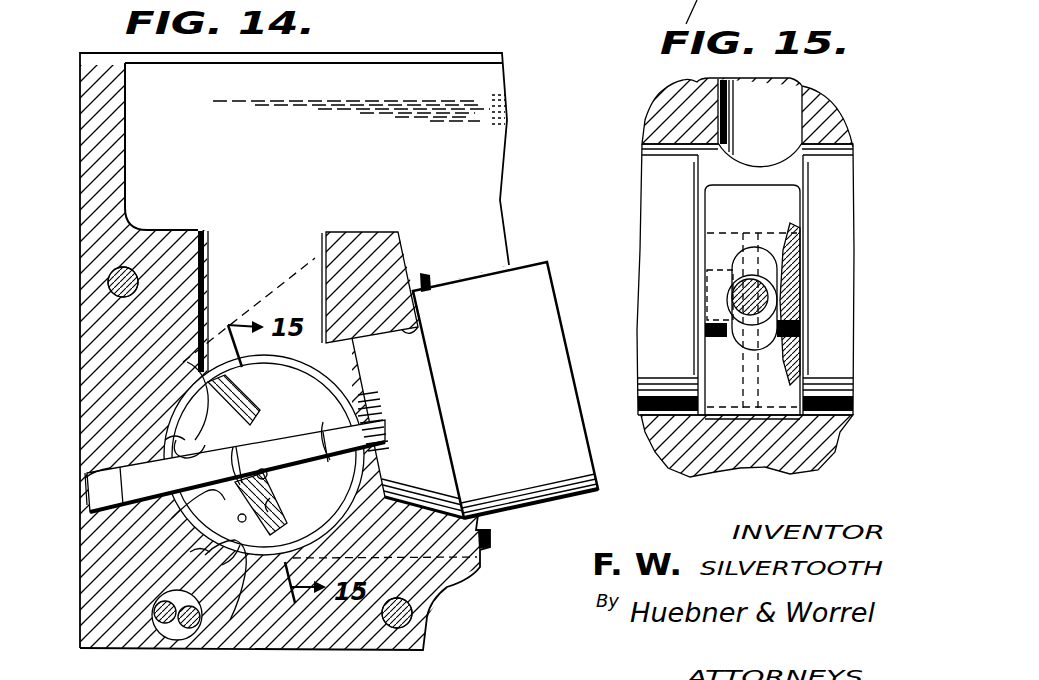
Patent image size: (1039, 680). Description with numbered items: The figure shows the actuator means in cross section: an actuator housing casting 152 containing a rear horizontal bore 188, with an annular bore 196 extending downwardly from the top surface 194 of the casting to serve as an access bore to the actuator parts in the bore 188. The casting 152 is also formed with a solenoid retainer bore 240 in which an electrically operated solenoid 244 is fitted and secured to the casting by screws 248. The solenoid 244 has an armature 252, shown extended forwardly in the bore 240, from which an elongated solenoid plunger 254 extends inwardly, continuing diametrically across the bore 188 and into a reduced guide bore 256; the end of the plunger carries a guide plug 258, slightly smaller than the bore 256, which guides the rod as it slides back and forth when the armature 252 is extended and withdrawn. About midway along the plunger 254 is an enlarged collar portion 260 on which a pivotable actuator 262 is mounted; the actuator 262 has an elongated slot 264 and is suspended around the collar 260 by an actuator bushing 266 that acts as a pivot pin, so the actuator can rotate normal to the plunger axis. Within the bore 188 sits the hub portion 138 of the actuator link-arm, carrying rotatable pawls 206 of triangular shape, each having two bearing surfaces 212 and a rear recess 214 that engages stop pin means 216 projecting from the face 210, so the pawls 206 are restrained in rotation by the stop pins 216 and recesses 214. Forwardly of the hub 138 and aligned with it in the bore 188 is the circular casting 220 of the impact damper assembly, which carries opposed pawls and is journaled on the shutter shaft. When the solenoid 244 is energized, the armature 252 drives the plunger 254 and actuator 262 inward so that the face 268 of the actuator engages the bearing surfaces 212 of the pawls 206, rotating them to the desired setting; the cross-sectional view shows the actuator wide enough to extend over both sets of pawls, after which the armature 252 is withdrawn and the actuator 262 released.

In FIG. 14, the actuator housing casting 152 is at (78, 322).
In FIG. 15, the actuator housing casting 152 is at (652, 125).
In FIG. 14, the top surface 194 is at (175, 232).
In FIG. 14, the annular bore 196 is at (325, 242).
In FIG. 15, the annular bore 196 is at (804, 98).
In FIG. 14, the face 210 is at (264, 455).
In FIG. 14, the solenoid 244 is at (505, 390).
In FIG. 14, the armature 252 is at (408, 428).
In FIG. 14, the solenoid retainer bore 240 is at (402, 330).
In FIG. 14, the screw 248 is at (425, 285).
In FIG. 14, the solenoid plunger 254 is at (358, 432).
In FIG. 14, the enlarged collar portion 260 is at (355, 392).
In FIG. 15, the enlarged collar portion 260 is at (768, 306).
In FIG. 14, the actuator bushing 266 is at (255, 424).
In FIG. 15, the actuator bushing 266 is at (790, 285).
In FIG. 14, the guide plug 258 is at (110, 492).
In FIG. 14, the reduced guide bore 256 is at (85, 480).
In FIG. 14, the bearing surface 212 is at (220, 392).
In FIG. 14, the rotatable pawl 206 is at (176, 440).
In FIG. 14, the rear recess 214 is at (165, 440).
In FIG. 14, the stop pin means 216 is at (172, 518).
In FIG. 14, the elongated slot 264 is at (267, 473).
In FIG. 15, the elongated slot 264 is at (765, 256).
In FIG. 14, the pivotable actuator 262 is at (270, 498).
In FIG. 15, the pivotable actuator 262 is at (772, 392).
In FIG. 14, the face 268 is at (246, 518).
In FIG. 14, the rear horizontal bore 188 is at (295, 560).
In FIG. 15, the circular casting 220 is at (685, 291).
In FIG. 15, the hub portion 138 is at (852, 283).